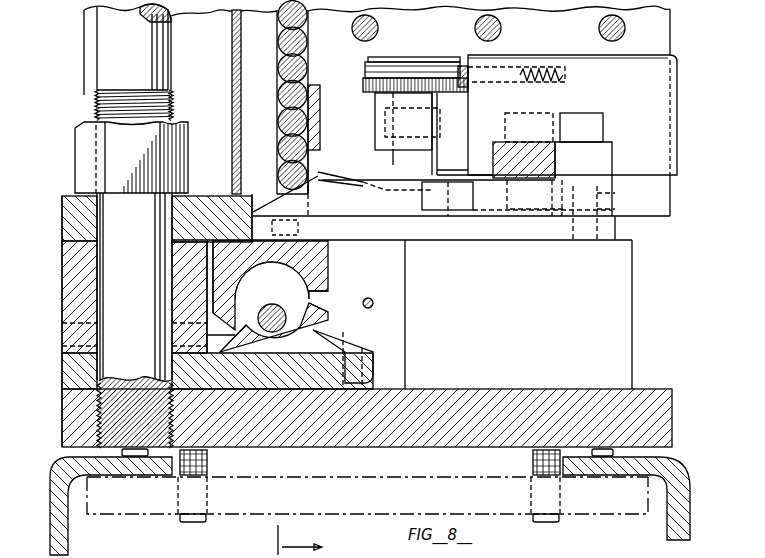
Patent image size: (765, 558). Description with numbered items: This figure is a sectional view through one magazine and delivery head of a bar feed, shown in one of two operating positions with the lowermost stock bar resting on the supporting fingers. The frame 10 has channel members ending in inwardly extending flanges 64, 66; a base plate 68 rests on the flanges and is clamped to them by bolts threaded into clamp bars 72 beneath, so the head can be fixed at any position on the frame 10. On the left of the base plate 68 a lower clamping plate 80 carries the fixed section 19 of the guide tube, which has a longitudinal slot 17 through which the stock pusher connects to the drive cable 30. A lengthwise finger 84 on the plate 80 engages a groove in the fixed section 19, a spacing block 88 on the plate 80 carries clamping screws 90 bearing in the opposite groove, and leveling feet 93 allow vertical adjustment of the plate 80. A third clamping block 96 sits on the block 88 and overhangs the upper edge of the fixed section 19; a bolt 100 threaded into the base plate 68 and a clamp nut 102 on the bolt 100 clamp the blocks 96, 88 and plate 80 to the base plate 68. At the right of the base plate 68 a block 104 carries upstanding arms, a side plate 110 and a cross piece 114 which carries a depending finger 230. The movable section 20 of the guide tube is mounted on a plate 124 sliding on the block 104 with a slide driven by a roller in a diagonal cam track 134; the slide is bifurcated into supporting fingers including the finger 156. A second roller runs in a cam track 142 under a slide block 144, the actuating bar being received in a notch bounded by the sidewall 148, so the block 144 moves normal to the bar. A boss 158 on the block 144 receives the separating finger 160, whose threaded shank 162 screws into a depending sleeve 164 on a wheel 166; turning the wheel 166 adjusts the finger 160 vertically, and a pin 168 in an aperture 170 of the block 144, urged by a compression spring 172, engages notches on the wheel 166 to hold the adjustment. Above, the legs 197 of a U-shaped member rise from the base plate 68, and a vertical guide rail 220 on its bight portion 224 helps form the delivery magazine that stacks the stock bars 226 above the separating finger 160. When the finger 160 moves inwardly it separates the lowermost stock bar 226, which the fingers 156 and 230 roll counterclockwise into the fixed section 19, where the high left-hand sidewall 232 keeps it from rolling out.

The frame 10 is at (287, 540).
The longitudinal slot 17 is at (328, 303).
The fixed section 19 is at (236, 310).
The movable section 20 is at (328, 272).
The drive cable 30 is at (372, 301).
The flange 64 is at (70, 459).
The flange 66 is at (660, 457).
The base plate 68 is at (388, 450).
The clamp bars 72 is at (367, 485).
The lower clamping plate 80 is at (62, 378).
The finger 84 is at (330, 327).
The spacing block 88 is at (62, 312).
The clamping screws 90 is at (62, 345).
The leveling or adjusting feet 93 is at (373, 378).
The third clamping block 96 is at (62, 226).
The bolt 100 is at (128, 230).
The clamp nut 102 is at (131, 157).
The block 104 is at (518, 314).
The plate 110 is at (455, 111).
The cross piece 114 is at (318, 109).
The plate 124 is at (421, 218).
The cam track 134 is at (425, 200).
The cam track 142 is at (600, 130).
The slide block 144 is at (572, 115).
The sidewall 148 is at (612, 168).
The supporting finger 156 is at (376, 194).
The boss 158 is at (376, 120).
The separating finger 160 is at (439, 135).
The threaded shank 162 is at (440, 118).
The depending sleeve 164 is at (393, 128).
The wheel 166 is at (365, 63).
The pin 168 is at (462, 66).
The aperture 170 is at (516, 56).
The compression spring 172 is at (548, 68).
The legs 197 is at (201, 31).
The guide rail 220 is at (250, 95).
The bight portion 224 is at (232, 93).
The stock bars 226 is at (302, 12).
The depending finger 230 is at (322, 168).
The high left-hand sidewall 232 is at (246, 282).